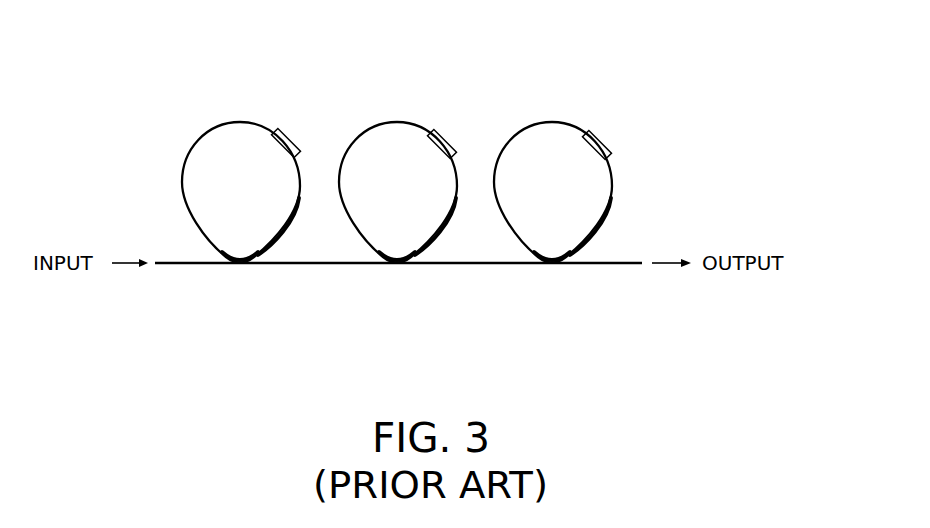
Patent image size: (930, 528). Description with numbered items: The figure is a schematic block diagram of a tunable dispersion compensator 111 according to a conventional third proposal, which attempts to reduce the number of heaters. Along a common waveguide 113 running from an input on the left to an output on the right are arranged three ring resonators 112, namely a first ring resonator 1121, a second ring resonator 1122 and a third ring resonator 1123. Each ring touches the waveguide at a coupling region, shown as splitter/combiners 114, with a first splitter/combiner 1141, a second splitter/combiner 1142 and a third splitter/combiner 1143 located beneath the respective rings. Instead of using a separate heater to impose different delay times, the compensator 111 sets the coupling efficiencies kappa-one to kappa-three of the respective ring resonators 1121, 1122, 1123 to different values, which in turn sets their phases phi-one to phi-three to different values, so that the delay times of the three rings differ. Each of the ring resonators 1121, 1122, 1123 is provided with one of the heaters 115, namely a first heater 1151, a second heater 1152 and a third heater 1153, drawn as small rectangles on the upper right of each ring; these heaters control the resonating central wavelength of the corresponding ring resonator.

The tunable dispersion compensator 111 is at (651, 69).
The ring resonators 112 is at (345, 168).
The first ring resonator 1121 is at (186, 172).
The second ring resonator 1122 is at (356, 140).
The third ring resonator 1123 is at (515, 140).
The bus waveguide 113 is at (187, 266).
The splitter/combiners 114 is at (443, 299).
The first splitter/combiner 1141 is at (250, 266).
The second splitter/combiner 1142 is at (392, 266).
The third splitter/combiner 1143 is at (557, 266).
The heaters 115 is at (530, 187).
The first heater 1151 is at (297, 156).
The second heater 1152 is at (452, 157).
The third heater 1153 is at (608, 150).